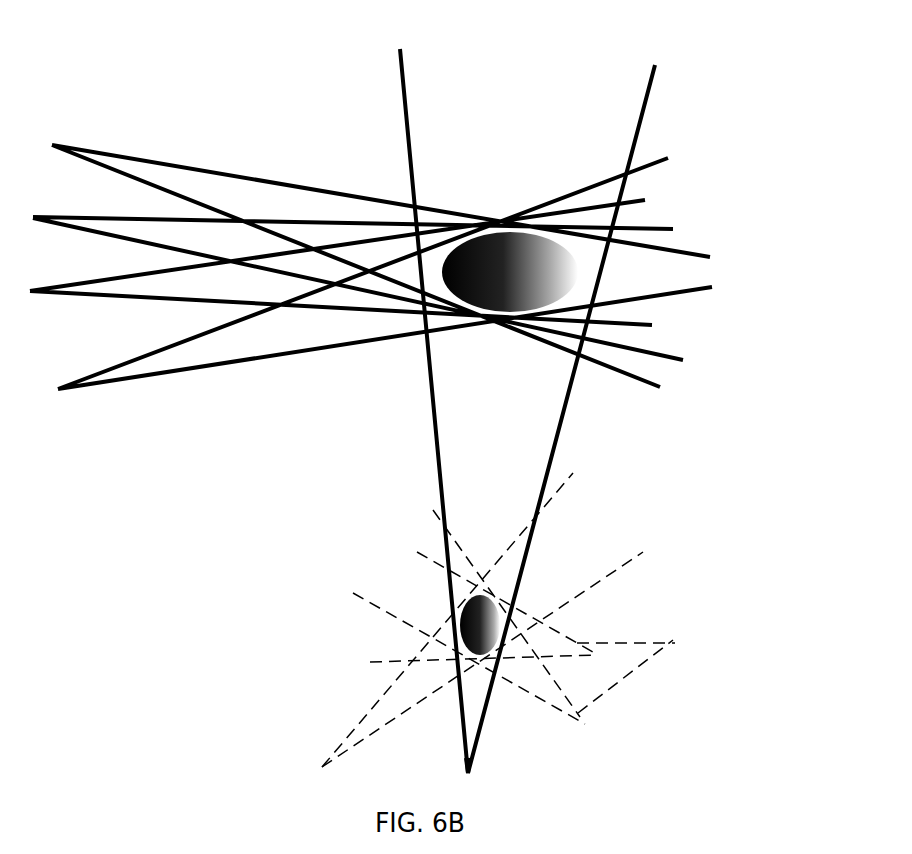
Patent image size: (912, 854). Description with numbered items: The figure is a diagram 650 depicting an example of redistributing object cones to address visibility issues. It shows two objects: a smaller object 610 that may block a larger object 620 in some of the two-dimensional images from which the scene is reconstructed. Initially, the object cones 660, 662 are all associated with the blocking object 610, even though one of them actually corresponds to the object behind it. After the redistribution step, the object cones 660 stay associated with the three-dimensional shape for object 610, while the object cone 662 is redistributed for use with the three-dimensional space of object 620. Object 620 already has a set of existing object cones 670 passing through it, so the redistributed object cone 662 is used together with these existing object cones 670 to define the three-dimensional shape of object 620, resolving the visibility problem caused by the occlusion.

The diagram 650 is at (728, 33).
The existing object cones 670 is at (108, 156).
The object 620 is at (560, 263).
The object 610 is at (487, 607).
The object cones 660 is at (352, 712).
The object cone 662 is at (478, 738).